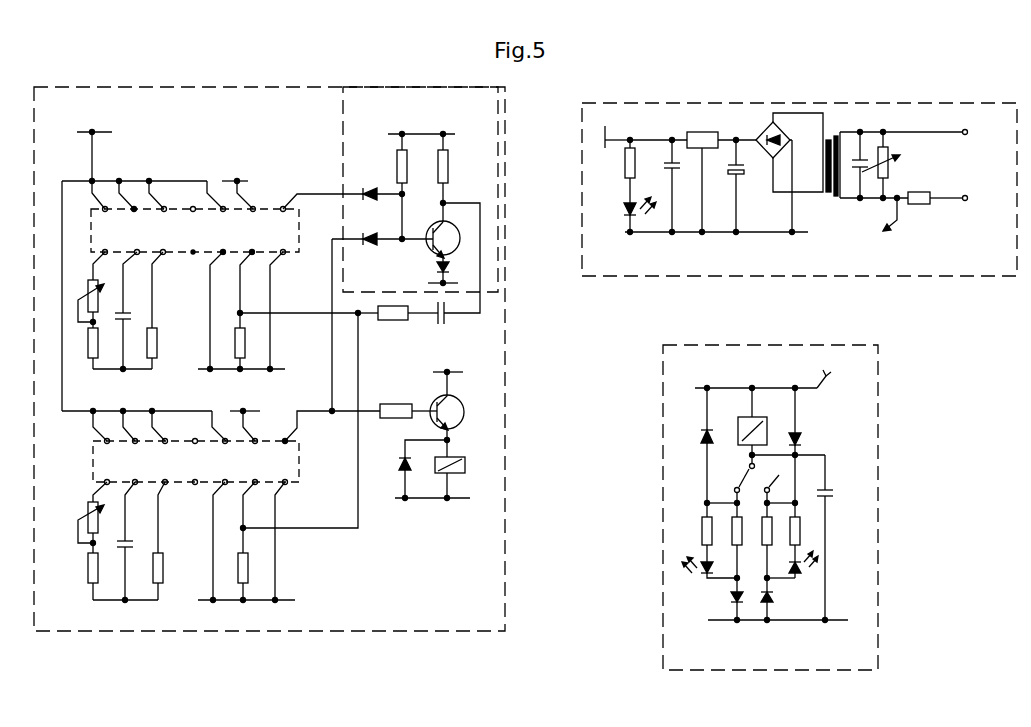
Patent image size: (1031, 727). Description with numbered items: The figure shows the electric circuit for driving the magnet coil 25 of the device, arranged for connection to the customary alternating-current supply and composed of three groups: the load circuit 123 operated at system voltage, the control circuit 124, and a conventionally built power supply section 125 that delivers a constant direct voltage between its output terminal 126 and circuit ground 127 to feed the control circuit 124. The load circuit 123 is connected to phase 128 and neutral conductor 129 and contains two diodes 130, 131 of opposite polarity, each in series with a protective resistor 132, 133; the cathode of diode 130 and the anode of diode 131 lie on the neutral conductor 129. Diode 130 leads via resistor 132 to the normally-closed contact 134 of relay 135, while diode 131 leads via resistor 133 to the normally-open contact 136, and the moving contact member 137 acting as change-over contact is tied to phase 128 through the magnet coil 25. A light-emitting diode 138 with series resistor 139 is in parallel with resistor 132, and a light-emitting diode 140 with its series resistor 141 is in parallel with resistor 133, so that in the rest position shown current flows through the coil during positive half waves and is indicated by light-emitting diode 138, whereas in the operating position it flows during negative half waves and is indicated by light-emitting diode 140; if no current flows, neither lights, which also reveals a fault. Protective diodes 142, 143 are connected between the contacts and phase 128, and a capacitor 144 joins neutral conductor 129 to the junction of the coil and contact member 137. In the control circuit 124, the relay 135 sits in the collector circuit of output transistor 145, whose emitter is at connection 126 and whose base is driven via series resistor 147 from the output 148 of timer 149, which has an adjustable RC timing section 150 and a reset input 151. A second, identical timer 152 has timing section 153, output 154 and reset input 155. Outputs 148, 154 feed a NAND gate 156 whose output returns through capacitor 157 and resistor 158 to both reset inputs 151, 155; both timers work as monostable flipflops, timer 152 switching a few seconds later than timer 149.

The control circuit 124 is at (208, 76).
The power supply section 125 is at (870, 91).
The load circuit 123 is at (900, 380).
The output terminal 126 is at (103, 130).
The circuit ground 127 is at (252, 370).
The timer 152 is at (180, 295).
The timer 149 is at (180, 447).
The adjustable timing section 153 is at (110, 379).
The adjustable timing section 150 is at (125, 618).
The output 154 is at (283, 205).
The reset input 155 is at (253, 254).
The reset input 151 is at (257, 485).
The output 148 is at (289, 440).
The NAND gate 156 is at (468, 184).
The capacitor 157 is at (444, 320).
The resistor 158 is at (392, 321).
The series resistor 147 is at (390, 406).
The output transistor 145 is at (464, 412).
The relay 135 is at (465, 465).
The light-emitting diode 140 is at (401, 472).
The phase 128 is at (767, 387).
The protective diode 142 is at (702, 437).
The magnet coil 25 is at (760, 430).
The moving contact member 137 is at (745, 476).
The normally-closed contact 134 is at (734, 490).
The normally-open contact 136 is at (788, 478).
The protective diode 143 is at (803, 441).
The capacitor 144 is at (830, 487).
The series resistor 139 is at (702, 530).
The light-emitting diode 138 is at (703, 570).
The protective resistor 132 is at (738, 543).
The diode 130 is at (732, 597).
The protective resistor 133 is at (770, 525).
The resistor 141 is at (802, 540).
The diode 131 is at (773, 595).
The neutral conductor 129 is at (793, 622).